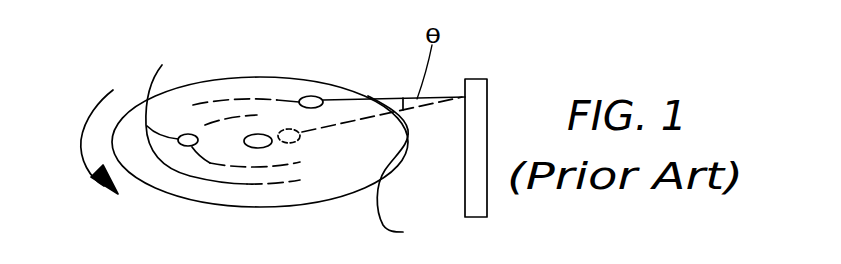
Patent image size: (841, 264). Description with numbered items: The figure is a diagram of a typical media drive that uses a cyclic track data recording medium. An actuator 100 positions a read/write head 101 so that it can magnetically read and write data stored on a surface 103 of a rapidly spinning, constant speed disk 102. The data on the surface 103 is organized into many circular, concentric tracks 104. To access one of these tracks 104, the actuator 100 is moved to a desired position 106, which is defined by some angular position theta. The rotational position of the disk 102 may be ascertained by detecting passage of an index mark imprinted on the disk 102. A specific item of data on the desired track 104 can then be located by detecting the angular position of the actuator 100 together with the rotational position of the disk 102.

The actuator 100 is at (387, 97).
The read/write head 101 is at (312, 96).
The disk 102 is at (257, 207).
The surface 103 is at (262, 88).
The tracks 104 is at (173, 120).
The desired position 106 is at (405, 172).